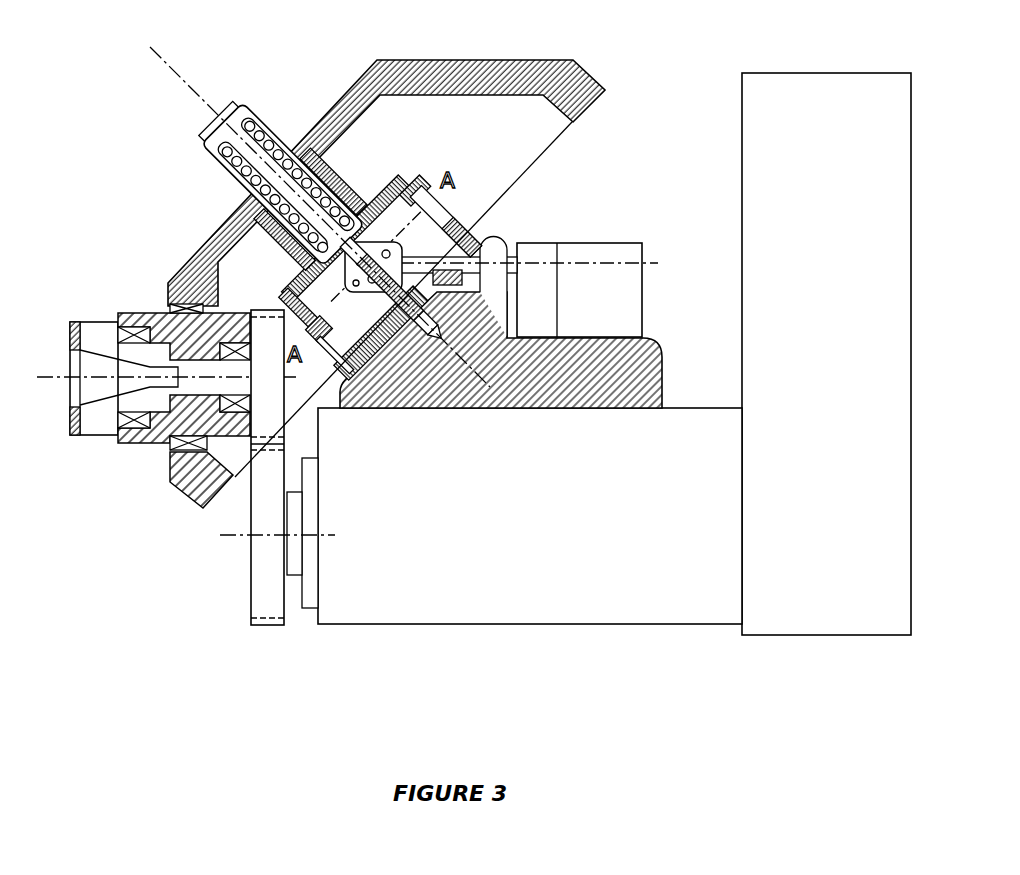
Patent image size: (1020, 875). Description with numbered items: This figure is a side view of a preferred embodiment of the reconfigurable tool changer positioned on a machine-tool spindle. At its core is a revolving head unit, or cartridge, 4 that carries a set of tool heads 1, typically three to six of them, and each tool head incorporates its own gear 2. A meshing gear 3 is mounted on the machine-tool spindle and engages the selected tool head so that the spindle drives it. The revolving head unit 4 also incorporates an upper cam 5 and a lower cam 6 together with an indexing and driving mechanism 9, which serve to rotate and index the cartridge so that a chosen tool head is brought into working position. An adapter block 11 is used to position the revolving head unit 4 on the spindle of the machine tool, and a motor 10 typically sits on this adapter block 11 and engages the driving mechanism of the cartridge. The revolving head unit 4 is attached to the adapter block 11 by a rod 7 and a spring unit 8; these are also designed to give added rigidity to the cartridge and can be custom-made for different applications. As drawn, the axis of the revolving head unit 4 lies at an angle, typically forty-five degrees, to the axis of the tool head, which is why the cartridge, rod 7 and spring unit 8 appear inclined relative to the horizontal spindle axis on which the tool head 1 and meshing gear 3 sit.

The tool head 1 is at (132, 300).
The gear 2 is at (259, 306).
The meshing gear 3 is at (249, 546).
The revolving head unit (cartridge) 4 is at (185, 247).
The upper cam 5 is at (431, 178).
The lower cam 6 is at (459, 206).
The rod 7 is at (249, 98).
The spring unit 8 is at (284, 120).
The indexing and driving mechanism 9 is at (420, 246).
The motor 10 is at (630, 240).
The adapter block 11 is at (661, 337).